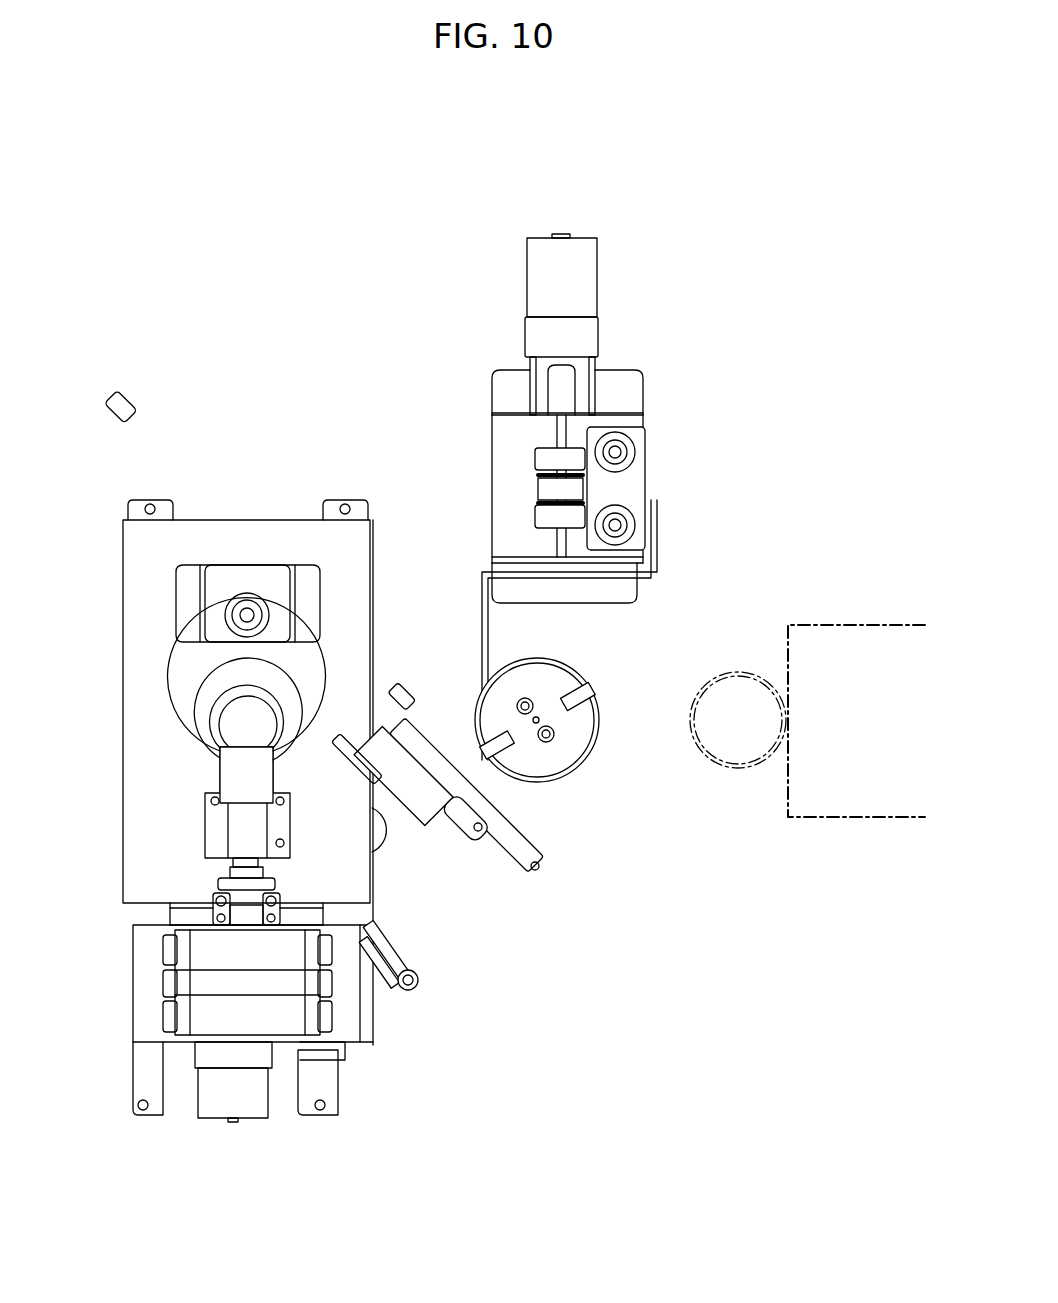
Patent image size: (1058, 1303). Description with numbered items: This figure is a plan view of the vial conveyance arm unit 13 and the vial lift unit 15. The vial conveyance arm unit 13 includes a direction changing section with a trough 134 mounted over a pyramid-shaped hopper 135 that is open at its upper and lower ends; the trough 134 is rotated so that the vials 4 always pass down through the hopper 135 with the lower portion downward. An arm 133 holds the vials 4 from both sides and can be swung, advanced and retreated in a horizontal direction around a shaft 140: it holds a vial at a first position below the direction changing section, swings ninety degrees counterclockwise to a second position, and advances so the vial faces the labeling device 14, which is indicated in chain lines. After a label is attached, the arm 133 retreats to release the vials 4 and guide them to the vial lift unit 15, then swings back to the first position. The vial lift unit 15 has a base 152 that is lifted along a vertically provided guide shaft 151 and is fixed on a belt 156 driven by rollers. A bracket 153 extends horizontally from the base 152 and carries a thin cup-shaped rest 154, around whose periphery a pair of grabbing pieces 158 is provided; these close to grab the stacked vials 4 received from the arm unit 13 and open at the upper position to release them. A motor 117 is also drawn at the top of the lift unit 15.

The vial conveyance arm unit 13 is at (248, 434).
The shaft 140 is at (217, 718).
The trough 134 is at (175, 948).
The hopper 135 is at (135, 990).
The arm 133 is at (412, 957).
The vial lift unit 15 is at (566, 204).
The motor 117 is at (525, 290).
The belt 156 is at (540, 488).
The base 152 is at (640, 490).
The guide shaft 151 is at (636, 462).
The bracket 153 is at (478, 616).
The rest 154 is at (560, 757).
The grabbing pieces 158 is at (600, 696).
The labeling device 14 is at (850, 625).
The vials 4 is at (732, 763).